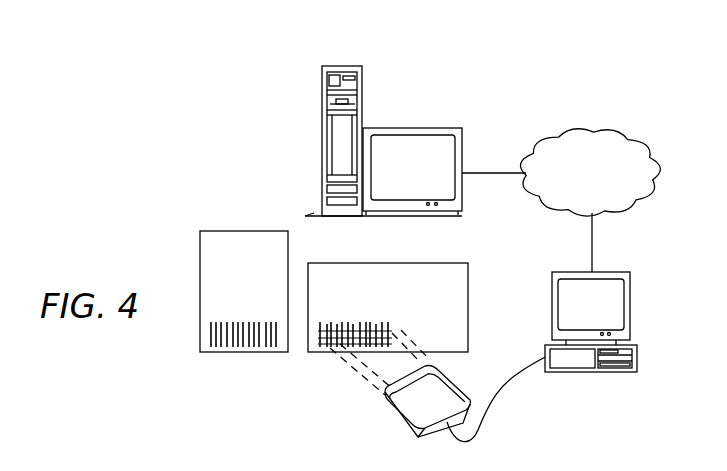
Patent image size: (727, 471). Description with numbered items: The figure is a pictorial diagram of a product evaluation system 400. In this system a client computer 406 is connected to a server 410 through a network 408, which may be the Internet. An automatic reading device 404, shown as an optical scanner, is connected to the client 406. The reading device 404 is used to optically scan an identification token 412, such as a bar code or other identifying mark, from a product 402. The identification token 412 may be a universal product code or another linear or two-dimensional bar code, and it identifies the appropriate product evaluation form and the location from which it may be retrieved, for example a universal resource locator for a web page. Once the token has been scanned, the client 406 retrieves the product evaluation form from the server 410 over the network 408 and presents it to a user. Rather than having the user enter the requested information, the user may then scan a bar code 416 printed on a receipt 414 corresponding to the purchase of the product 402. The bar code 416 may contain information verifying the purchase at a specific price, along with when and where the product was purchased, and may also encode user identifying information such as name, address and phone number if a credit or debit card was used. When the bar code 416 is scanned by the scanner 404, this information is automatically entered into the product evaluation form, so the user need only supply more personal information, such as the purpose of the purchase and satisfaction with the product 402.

The product evaluation system 400 is at (160, 160).
The product 402 is at (468, 322).
The automatic reading device 404 is at (400, 420).
The client computer 406 is at (632, 311).
The network 408 is at (620, 132).
The server 410 is at (413, 127).
The identification token 412 is at (390, 328).
The receipt 414 is at (240, 353).
The bar code 416 is at (240, 325).